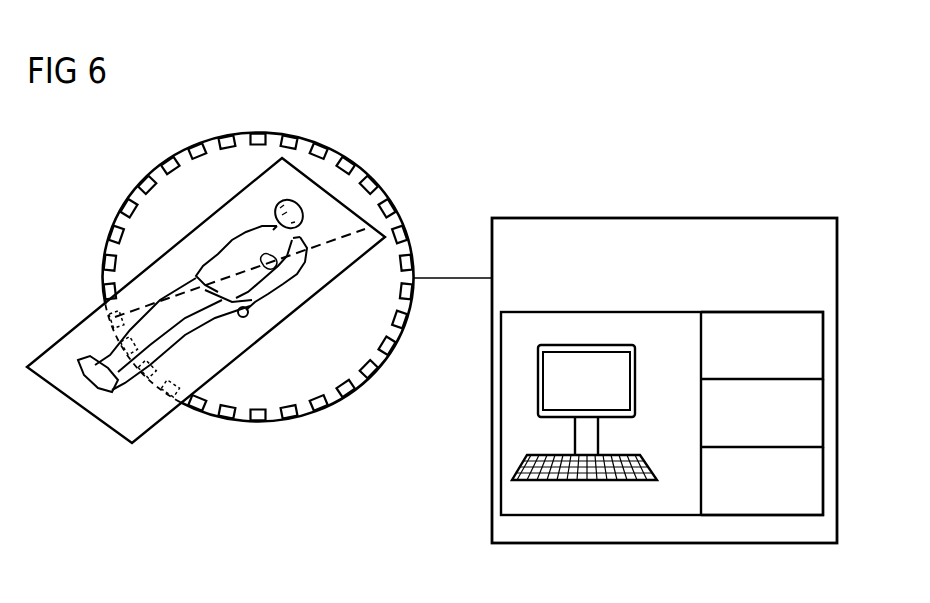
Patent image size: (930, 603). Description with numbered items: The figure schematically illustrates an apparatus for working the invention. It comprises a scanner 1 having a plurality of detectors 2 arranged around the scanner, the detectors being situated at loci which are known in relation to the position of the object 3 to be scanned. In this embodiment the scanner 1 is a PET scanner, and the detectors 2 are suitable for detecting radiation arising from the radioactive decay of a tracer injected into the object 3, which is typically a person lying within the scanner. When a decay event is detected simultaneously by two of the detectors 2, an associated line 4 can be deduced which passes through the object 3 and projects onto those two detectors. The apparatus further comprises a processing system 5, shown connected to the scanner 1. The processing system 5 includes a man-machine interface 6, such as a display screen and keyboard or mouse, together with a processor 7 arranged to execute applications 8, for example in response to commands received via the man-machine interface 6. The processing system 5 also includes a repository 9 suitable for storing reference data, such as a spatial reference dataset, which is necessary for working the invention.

The scanner 1 is at (182, 152).
The detectors 2 is at (320, 150).
The object 3 is at (234, 228).
The line 4 is at (345, 233).
The processing system 5 is at (664, 216).
The man-machine interface 6 is at (607, 313).
The processor 7 is at (708, 351).
The applications 8 is at (708, 416).
The repository 9 is at (708, 484).